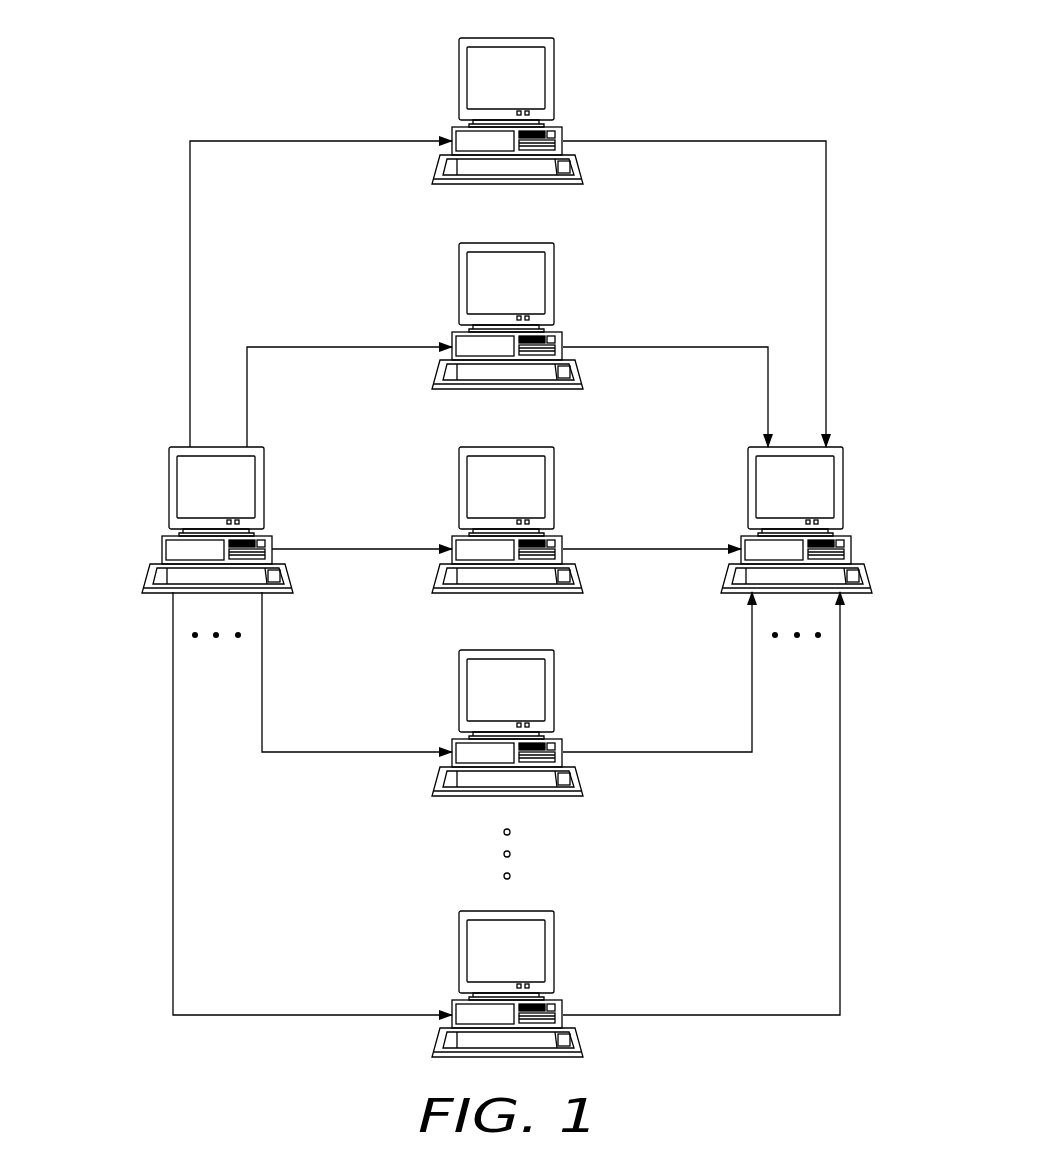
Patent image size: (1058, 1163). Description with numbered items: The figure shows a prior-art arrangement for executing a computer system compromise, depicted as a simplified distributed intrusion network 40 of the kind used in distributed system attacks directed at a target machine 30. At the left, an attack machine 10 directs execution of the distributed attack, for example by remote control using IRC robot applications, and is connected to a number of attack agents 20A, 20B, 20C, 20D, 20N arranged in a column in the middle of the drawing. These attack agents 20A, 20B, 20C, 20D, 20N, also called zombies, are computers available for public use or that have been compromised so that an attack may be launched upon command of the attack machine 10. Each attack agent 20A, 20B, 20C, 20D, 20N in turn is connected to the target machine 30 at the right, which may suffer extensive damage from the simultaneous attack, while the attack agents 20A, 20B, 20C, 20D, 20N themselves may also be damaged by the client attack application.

The distributed intrusion network 40 is at (215, 100).
The attack machine 10 is at (170, 475).
The attack agent 20A is at (556, 80).
The attack agent 20B is at (556, 285).
The attack agent 20C is at (556, 489).
The attack agent 20D is at (556, 692).
The attack agent 20N is at (556, 953).
The target machine 30 is at (848, 495).